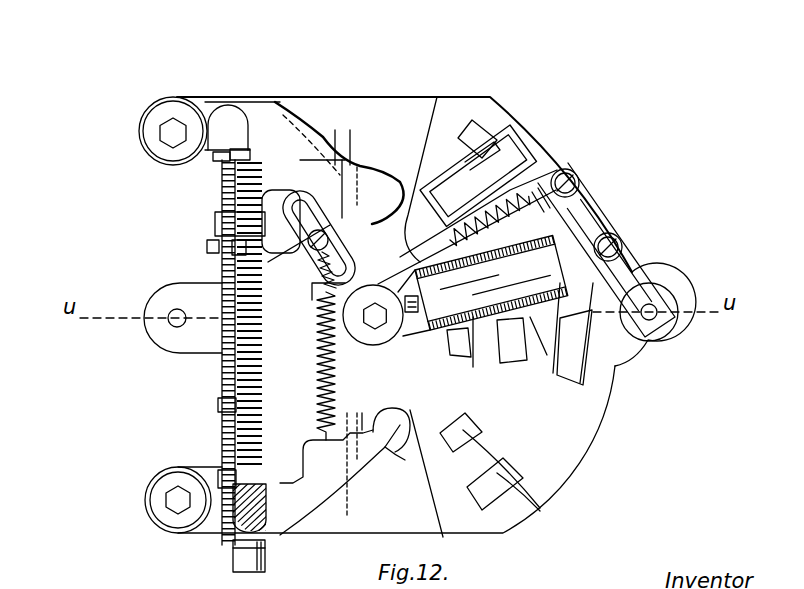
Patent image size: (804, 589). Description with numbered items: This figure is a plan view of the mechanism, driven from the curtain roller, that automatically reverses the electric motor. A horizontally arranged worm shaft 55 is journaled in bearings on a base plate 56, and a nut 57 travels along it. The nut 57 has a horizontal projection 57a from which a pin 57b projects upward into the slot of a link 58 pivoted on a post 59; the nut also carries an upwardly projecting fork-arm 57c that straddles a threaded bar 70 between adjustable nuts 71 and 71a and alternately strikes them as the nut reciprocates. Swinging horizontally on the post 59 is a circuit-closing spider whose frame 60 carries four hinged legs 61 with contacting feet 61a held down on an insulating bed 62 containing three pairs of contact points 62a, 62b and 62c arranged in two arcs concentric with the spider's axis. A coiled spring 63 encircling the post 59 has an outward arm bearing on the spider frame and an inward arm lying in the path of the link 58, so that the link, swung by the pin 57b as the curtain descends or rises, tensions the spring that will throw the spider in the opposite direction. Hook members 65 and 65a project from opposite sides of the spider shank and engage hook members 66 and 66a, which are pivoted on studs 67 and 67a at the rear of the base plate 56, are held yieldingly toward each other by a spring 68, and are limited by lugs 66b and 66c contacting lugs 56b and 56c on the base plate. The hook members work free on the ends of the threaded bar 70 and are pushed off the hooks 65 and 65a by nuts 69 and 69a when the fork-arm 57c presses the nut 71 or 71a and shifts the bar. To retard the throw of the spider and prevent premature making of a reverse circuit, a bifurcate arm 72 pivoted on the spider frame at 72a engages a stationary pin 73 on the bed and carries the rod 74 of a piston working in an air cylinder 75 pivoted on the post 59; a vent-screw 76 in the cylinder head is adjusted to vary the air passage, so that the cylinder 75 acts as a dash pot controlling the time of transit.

The worm shaft 55 is at (267, 455).
The base plate 56 is at (405, 105).
The lug 56b is at (350, 427).
The lug 56c is at (341, 130).
The nut 57 is at (240, 213).
The horizontal projection 57a is at (268, 252).
The pin 57b is at (316, 252).
The fork-arm 57c is at (245, 252).
The link 58 is at (215, 223).
The post 59 is at (374, 327).
The spider frame 60 is at (520, 140).
The legs 61 is at (508, 170).
The contacting feet 61a is at (485, 145).
The insulating bed 62 is at (516, 367).
The contact points 62a is at (520, 482).
The contact points 62b is at (555, 356).
The contact points 62c is at (420, 188).
The coiled spring 63 is at (313, 305).
The hook member 65 is at (455, 360).
The hook member 65a is at (360, 213).
The hook member 66 is at (395, 452).
The hook member 66a is at (302, 125).
The lug 66b is at (385, 470).
The lug 66c is at (290, 108).
The stud 67 is at (176, 500).
The stud 67a is at (175, 132).
The spring 68 is at (318, 402).
The nut 69 is at (225, 478).
The nut 69a is at (220, 160).
The threaded bar 70 is at (222, 352).
The adjustable nut 71 is at (222, 407).
The adjustable nut 71a is at (207, 245).
The bifurcate arm 72 is at (640, 262).
The pivot 72a is at (580, 178).
The stationary pin 73 is at (672, 328).
The piston rod 74 is at (620, 238).
The air cylinder 75 is at (488, 312).
The vent-screw 76 is at (408, 314).